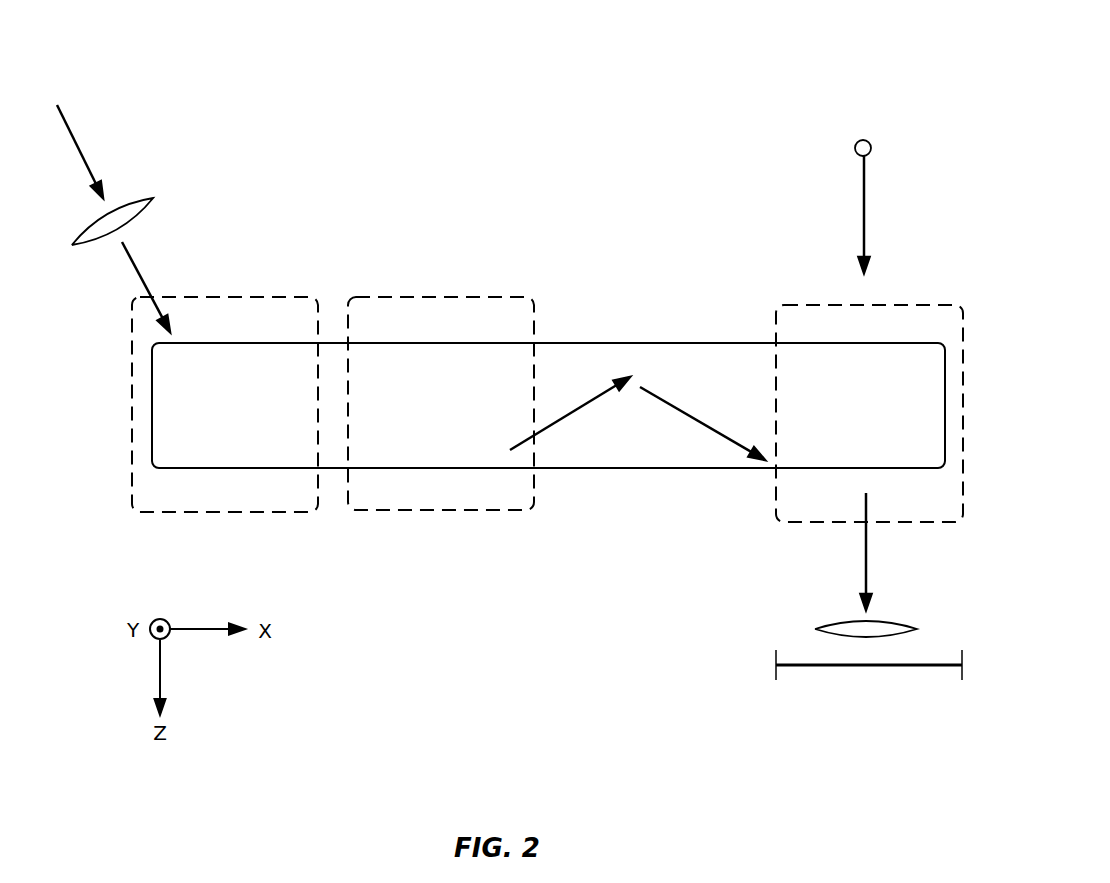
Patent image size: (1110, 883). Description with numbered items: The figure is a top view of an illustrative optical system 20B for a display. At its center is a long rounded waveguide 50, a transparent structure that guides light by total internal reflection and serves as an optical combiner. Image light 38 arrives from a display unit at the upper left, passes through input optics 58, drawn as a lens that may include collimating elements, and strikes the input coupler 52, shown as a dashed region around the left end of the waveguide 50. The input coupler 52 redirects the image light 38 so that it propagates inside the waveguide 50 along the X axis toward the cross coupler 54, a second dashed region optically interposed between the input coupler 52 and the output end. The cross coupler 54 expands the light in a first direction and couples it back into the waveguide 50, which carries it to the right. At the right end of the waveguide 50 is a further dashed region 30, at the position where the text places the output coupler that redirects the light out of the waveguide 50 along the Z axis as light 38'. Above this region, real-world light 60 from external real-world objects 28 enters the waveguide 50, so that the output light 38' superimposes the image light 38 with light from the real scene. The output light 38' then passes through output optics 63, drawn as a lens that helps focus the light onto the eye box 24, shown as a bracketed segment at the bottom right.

The optical system 20B is at (753, 91).
The eye box 24 is at (849, 667).
The real-world objects 28 is at (871, 146).
The input coupler 30 is at (803, 305).
The image light 38 is at (411, 282).
The output light 38' is at (909, 551).
The waveguide 50 is at (647, 343).
The input coupler 52 is at (275, 297).
The cross coupler 54 is at (437, 297).
The input optics 58 is at (153, 198).
The real-world light 60 is at (865, 202).
The output optics 63 is at (917, 629).